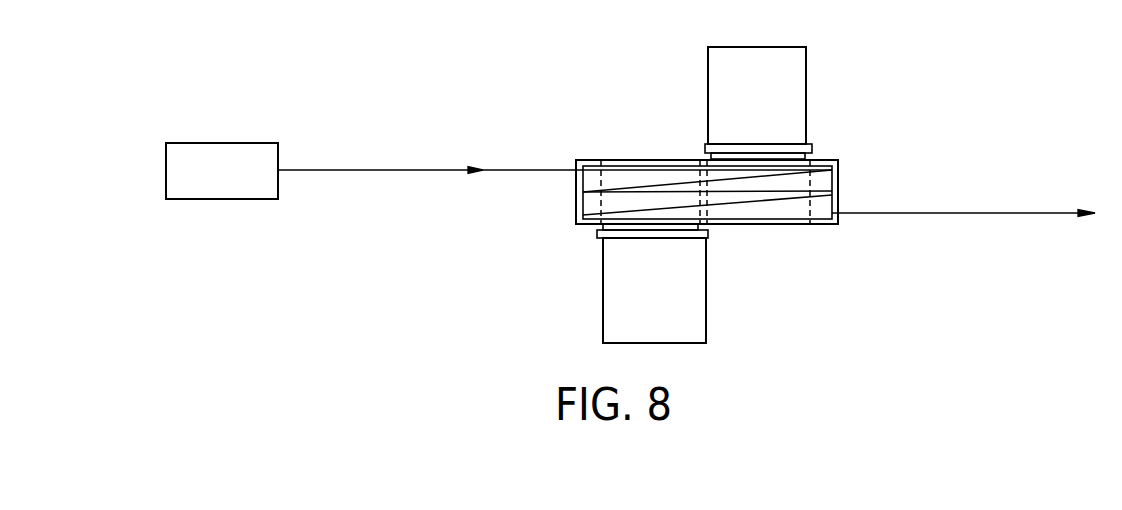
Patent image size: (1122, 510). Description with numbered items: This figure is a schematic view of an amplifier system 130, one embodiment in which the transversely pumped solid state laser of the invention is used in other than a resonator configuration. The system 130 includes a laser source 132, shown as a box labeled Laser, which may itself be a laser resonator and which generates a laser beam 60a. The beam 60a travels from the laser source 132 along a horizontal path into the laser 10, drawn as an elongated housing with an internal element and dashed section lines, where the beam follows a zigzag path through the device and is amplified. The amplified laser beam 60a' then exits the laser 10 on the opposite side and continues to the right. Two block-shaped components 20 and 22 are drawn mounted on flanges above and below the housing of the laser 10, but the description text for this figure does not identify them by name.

The laser 10 is at (828, 95).
The transducer 20 is at (667, 301).
The transducer 22 is at (772, 101).
The laser beam 60a is at (555, 139).
The amplified laser beam 60a' is at (963, 190).
The amplifier system 130 is at (553, 53).
The laser source 132 is at (219, 143).